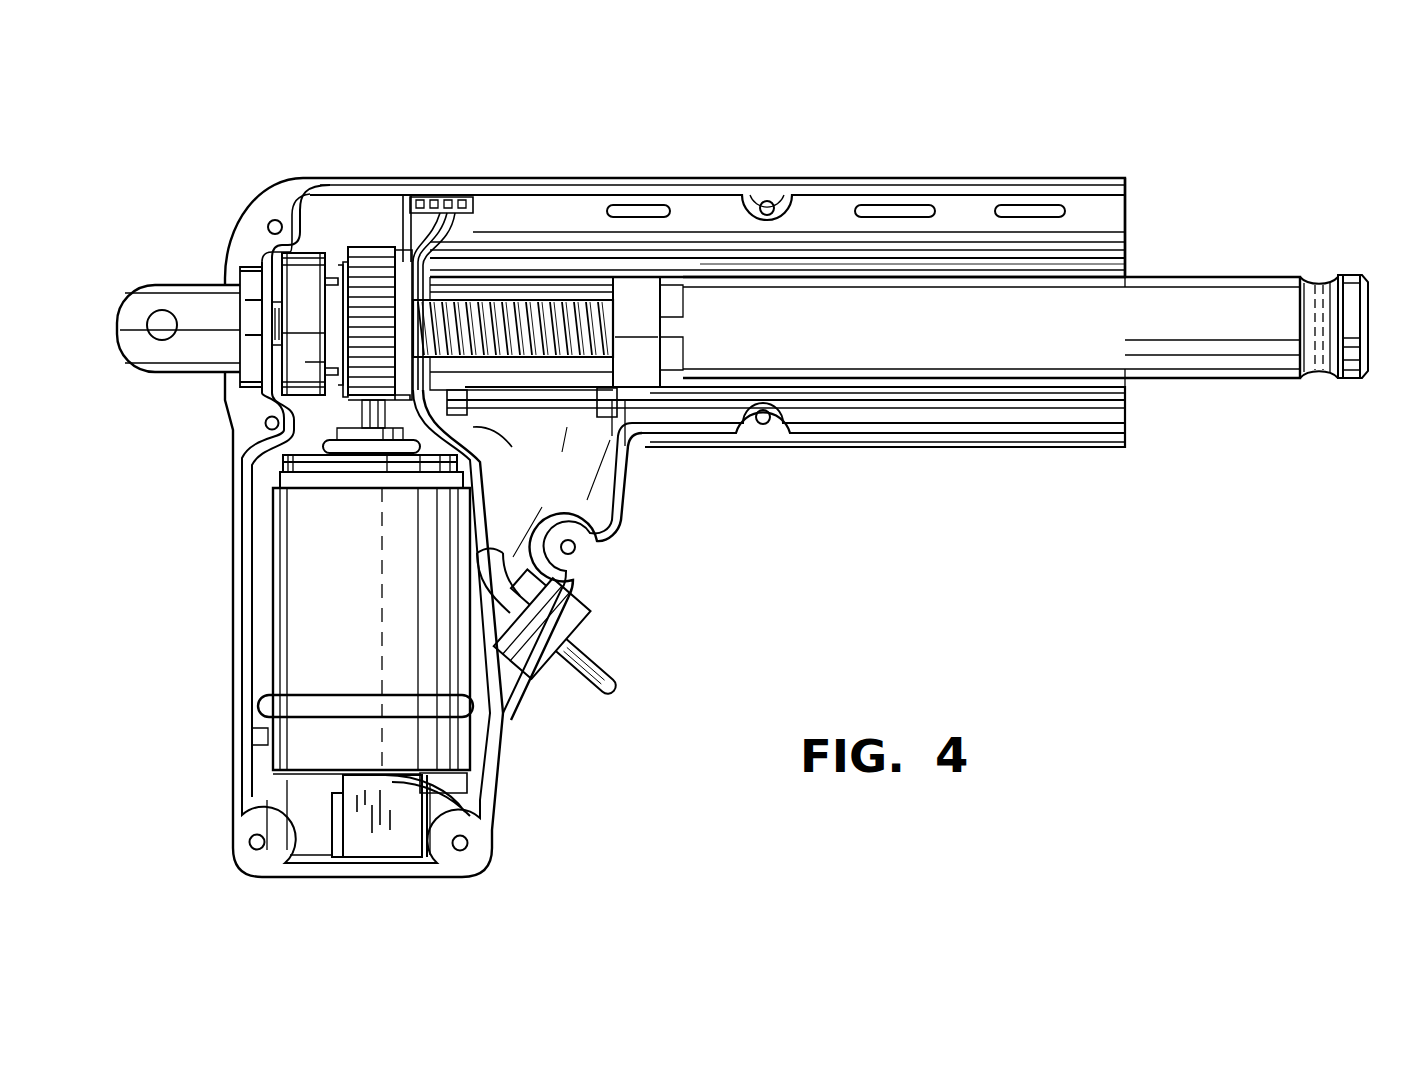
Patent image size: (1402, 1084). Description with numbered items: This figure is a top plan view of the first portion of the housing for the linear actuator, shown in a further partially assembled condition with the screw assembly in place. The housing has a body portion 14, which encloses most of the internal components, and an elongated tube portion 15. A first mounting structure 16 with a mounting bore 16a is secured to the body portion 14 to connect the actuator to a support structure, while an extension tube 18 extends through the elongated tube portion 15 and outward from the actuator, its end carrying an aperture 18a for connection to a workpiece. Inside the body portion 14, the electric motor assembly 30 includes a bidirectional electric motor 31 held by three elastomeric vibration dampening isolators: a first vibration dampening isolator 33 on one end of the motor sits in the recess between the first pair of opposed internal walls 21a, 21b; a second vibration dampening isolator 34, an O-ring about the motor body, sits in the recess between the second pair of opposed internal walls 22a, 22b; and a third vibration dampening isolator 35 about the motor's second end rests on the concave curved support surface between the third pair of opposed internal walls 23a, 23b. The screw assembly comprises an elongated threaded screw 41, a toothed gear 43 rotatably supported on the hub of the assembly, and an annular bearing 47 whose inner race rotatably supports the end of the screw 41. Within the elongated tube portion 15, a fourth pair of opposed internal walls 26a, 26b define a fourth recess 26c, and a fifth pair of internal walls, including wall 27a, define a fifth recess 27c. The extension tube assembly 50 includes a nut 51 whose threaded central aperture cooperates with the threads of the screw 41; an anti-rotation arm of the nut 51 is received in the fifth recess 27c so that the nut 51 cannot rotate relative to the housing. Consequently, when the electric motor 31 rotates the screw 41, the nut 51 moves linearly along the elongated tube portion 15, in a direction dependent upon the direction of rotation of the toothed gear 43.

The body portion 14 is at (609, 622).
The elongated tube portion 15 is at (745, 160).
The first mounting structure 16 is at (190, 300).
The mounting bore 16a is at (150, 315).
The extension tube 18 is at (1192, 363).
The aperture 18a is at (1318, 292).
The first opposed internal wall 21a is at (335, 835).
The first opposed internal wall 21b is at (440, 835).
The second opposed internal wall 22a is at (258, 689).
The second opposed internal wall 22b is at (258, 735).
The third opposed internal wall 23a is at (232, 430).
The third opposed internal wall 23b is at (475, 427).
The fourth opposed internal wall 26a is at (803, 248).
The fourth opposed internal wall 26b is at (942, 270).
The fourth recess 26c is at (872, 262).
The fifth opposed internal wall 27a is at (867, 395).
The fifth recess 27c is at (590, 415).
The electric motor assembly 30 is at (264, 547).
The electric motor 31 is at (305, 620).
The first vibration dampening isolator 33 is at (378, 845).
The second vibration dampening isolator 34 is at (480, 742).
The third vibration dampening isolator 35 is at (380, 450).
The threaded screw 41 is at (510, 300).
The toothed gear 43 is at (367, 258).
The annular bearing 47 is at (300, 283).
The extension tube assembly 50 is at (1158, 257).
The nut 51 is at (633, 285).